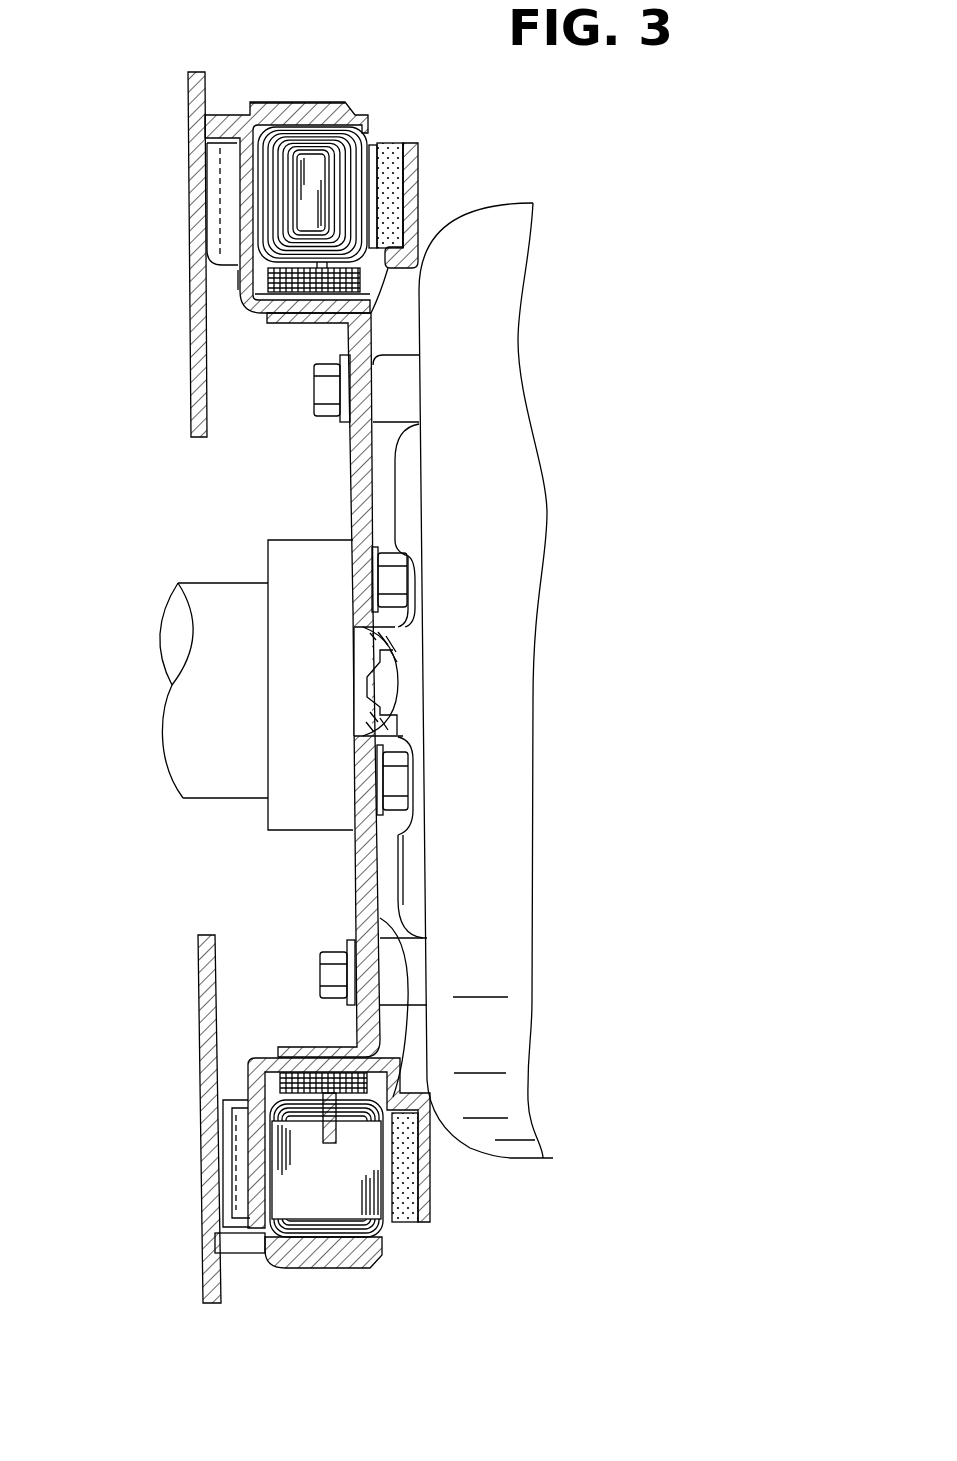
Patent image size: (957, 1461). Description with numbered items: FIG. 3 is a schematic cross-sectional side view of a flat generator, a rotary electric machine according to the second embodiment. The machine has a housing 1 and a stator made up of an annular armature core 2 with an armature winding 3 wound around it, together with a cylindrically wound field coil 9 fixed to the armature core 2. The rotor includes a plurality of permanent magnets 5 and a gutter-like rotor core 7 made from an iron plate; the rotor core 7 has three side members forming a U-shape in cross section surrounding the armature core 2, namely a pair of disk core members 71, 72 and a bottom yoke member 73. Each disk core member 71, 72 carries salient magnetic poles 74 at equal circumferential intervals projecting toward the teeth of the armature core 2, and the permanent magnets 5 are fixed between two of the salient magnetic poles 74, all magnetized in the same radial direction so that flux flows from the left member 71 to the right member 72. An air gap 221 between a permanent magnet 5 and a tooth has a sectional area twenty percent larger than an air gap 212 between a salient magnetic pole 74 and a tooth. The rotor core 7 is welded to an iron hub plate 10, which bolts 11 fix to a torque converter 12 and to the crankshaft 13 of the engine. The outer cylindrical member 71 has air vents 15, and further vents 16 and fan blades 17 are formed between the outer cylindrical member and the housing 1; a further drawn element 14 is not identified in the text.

The housing 1 is at (230, 138).
The air gap 212 is at (248, 140).
The disk core member 71 is at (213, 162).
The salient magnetic pole 74 is at (242, 178).
The armature core 2 is at (310, 195).
The armature winding 3 is at (270, 228).
The permanent magnet 5 is at (382, 143).
The air gap 221 is at (408, 165).
The disk core member 72 is at (415, 182).
The field coil 9 is at (285, 300).
The rotor core 7 is at (233, 293).
The bottom yoke member 73 is at (265, 298).
The hub plate 10 is at (352, 447).
The bolt 11 is at (327, 398).
The torque converter 12 is at (443, 515).
The crankshaft 13 is at (212, 665).
The elastic member 14 is at (380, 817).
The air vent 15 is at (385, 920).
The vent 16 is at (240, 1247).
The fan blade 17 is at (240, 1162).